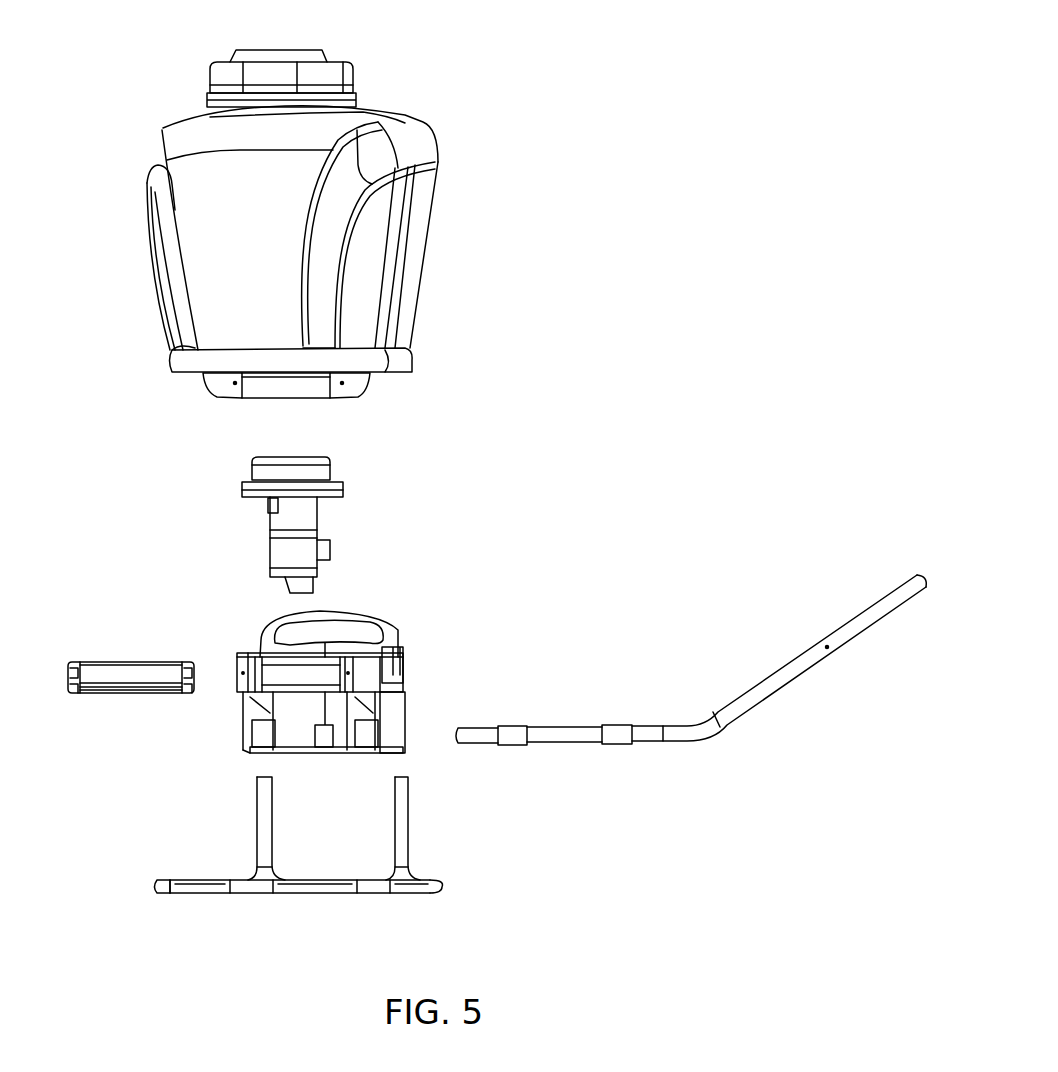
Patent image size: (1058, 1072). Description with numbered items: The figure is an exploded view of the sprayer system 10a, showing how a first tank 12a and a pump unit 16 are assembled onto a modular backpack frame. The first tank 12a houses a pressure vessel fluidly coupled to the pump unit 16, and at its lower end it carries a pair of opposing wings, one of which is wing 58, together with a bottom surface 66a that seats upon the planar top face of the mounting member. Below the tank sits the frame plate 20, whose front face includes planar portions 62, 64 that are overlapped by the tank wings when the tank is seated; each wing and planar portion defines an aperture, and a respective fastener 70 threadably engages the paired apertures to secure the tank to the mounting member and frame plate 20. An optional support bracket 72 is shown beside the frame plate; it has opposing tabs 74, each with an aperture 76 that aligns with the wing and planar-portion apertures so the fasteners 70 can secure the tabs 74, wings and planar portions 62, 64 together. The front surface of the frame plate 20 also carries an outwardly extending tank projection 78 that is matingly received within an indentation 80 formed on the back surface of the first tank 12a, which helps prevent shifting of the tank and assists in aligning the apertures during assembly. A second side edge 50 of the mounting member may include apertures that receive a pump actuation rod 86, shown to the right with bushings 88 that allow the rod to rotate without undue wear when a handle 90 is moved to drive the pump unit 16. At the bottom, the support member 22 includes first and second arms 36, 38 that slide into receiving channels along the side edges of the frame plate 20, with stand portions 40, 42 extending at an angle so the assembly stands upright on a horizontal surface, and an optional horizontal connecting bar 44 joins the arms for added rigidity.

The sprayer system 10a is at (668, 137).
The first tank 12a is at (163, 128).
The pump unit 16 is at (265, 547).
The frame plate 20 is at (403, 658).
The support member 22 is at (407, 843).
The first arm 36 is at (408, 807).
The second arm 38 is at (266, 823).
The stand portion 40 is at (420, 893).
The stand portion 42 is at (208, 880).
The horizontal connecting bar 44 is at (310, 893).
The second side edge 50 is at (215, 395).
The wing 58 is at (365, 393).
The planar portion 62 is at (352, 657).
The planar portion 64 is at (245, 657).
The bottom surface 66a is at (392, 368).
The fastener 70 is at (70, 662).
The support bracket 72 is at (122, 670).
The tab 74 is at (70, 693).
The aperture 76 is at (70, 681).
The tank projection 78 is at (338, 630).
The indentation 80 is at (512, 726).
The pump actuation rod 86 is at (568, 727).
The bushing 88 is at (620, 726).
The handle 90 is at (812, 642).